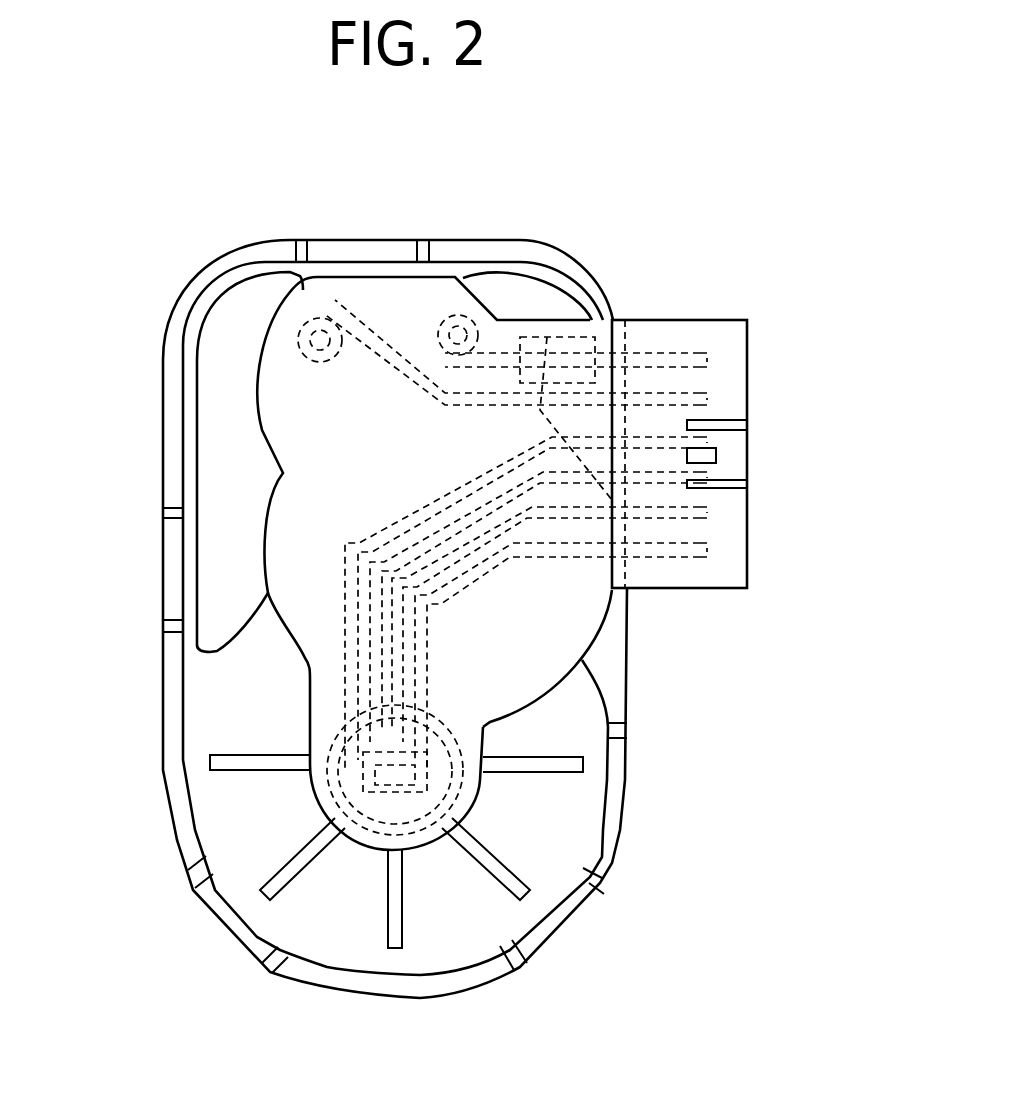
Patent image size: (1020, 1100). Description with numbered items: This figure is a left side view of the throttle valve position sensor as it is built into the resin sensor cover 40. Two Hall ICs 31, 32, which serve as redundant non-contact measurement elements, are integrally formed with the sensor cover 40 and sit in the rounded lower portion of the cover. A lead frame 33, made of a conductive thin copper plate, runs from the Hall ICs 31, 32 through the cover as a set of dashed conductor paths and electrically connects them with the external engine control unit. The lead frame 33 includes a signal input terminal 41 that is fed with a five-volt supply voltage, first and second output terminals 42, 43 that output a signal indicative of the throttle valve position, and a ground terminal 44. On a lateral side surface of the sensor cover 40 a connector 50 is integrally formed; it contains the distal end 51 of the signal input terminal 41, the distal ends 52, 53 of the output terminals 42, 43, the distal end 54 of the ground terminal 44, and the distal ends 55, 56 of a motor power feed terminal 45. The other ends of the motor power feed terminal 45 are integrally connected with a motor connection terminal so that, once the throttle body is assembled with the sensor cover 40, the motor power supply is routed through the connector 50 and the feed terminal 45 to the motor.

The Hall IC 31 is at (470, 800).
The Hall IC 32 is at (370, 853).
The lead frame 33 is at (318, 686).
The sensor cover 40 is at (212, 905).
The signal input terminal (VDD) 41 is at (318, 660).
The output terminal (OUT 1) 42 is at (395, 618).
The output terminal (OUT 2) 43 is at (395, 618).
The ground terminal (GND) 44 is at (307, 662).
The motor power feed terminal 45 is at (547, 330).
The connector 50 is at (745, 590).
The distal end of signal input terminal 51 is at (707, 513).
The distal end of output terminal 52 is at (707, 550).
The distal end of output terminal 53 is at (707, 478).
The distal end of ground terminal 54 is at (707, 443).
The distal end of motor power feed terminal 55 is at (707, 399).
The distal end of motor power feed terminal 56 is at (707, 360).